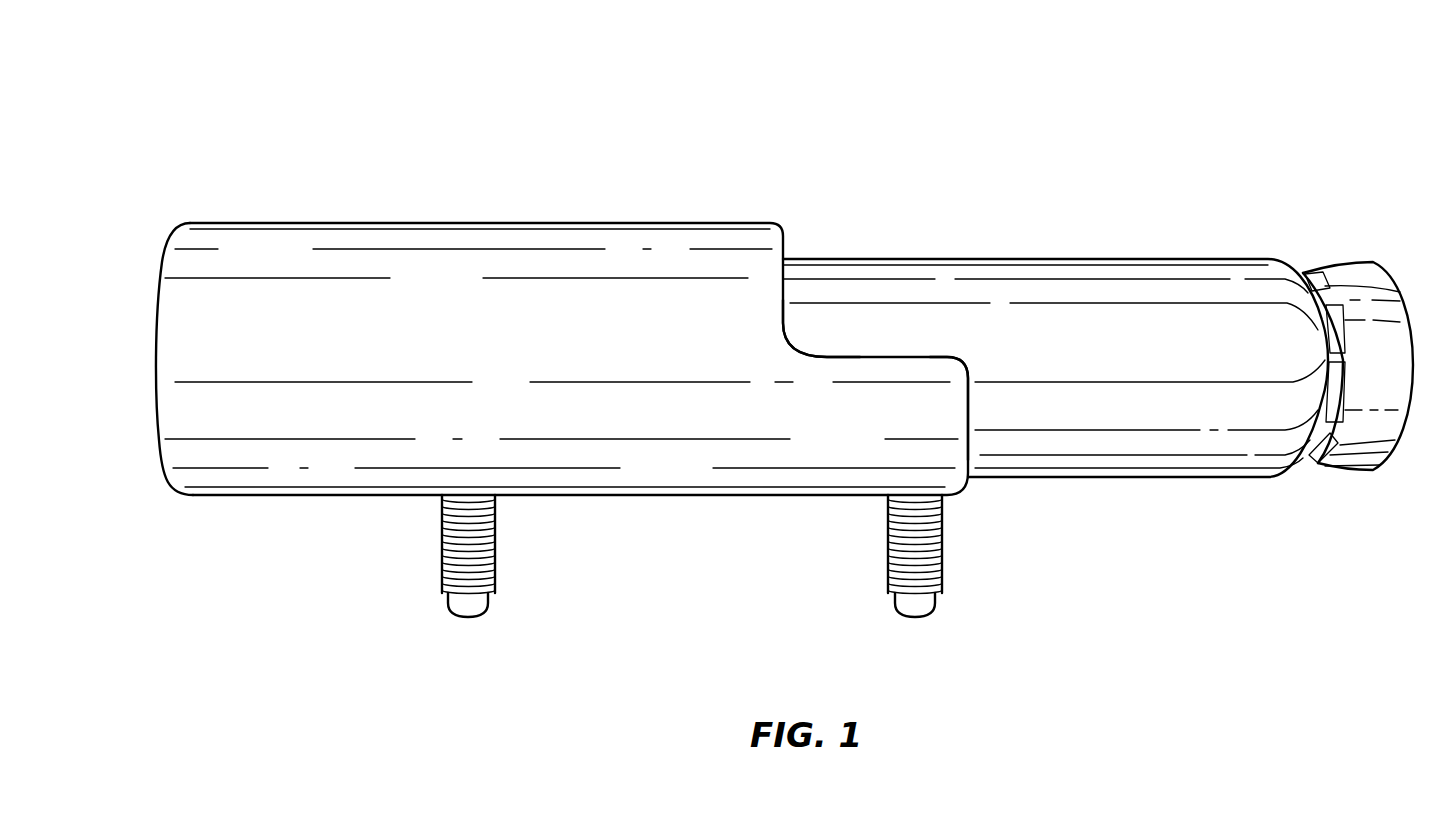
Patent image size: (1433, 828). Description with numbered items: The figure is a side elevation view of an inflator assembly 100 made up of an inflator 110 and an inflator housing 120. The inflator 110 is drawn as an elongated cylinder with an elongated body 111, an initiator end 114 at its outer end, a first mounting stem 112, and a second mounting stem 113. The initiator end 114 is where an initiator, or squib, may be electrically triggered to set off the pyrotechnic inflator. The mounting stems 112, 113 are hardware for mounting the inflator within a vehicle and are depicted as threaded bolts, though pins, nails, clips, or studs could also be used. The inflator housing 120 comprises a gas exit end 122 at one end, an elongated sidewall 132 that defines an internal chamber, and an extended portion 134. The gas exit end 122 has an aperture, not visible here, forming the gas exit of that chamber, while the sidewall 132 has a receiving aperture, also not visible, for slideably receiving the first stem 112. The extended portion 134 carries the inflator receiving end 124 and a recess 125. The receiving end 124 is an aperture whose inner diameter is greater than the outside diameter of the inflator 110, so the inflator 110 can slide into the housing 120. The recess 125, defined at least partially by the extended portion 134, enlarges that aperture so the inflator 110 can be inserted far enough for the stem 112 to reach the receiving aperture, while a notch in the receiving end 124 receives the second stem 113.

The inflator assembly 100 is at (683, 130).
The inflator 110 is at (1125, 330).
The elongated body 111 is at (1087, 290).
The first mounting stem 112 is at (448, 597).
The second mounting stem 113 is at (925, 600).
The initiator end 114 is at (1398, 305).
The inflator housing 120 is at (290, 255).
The gas exit end 122 is at (142, 290).
The inflator receiving end 124 is at (968, 373).
The recess 125 is at (800, 330).
The elongated sidewall 132 is at (442, 260).
The extended portion 134 is at (855, 445).